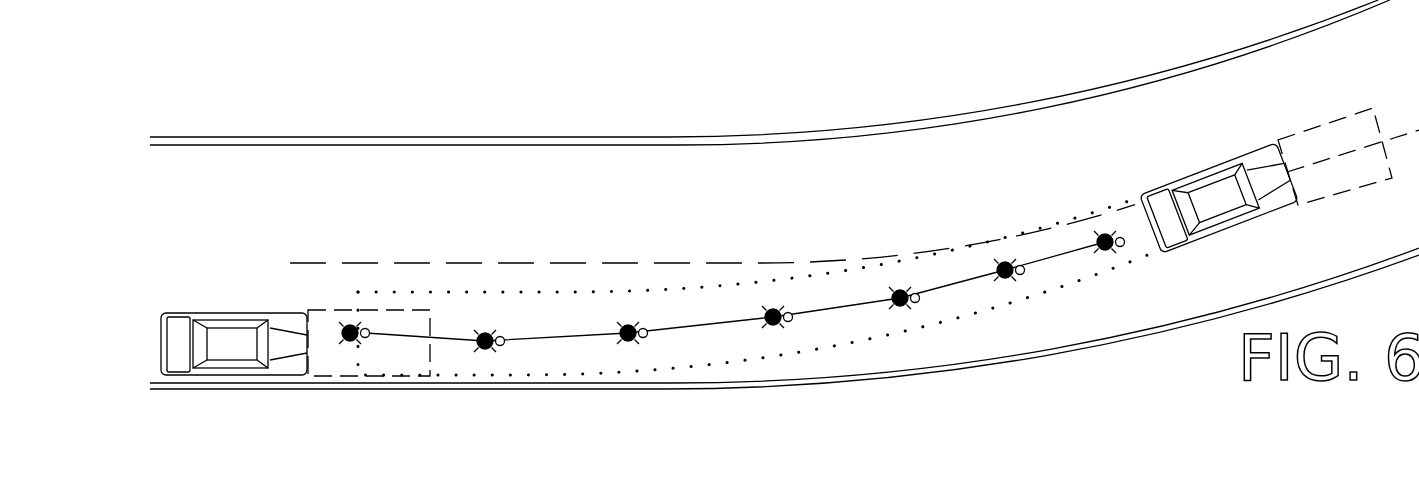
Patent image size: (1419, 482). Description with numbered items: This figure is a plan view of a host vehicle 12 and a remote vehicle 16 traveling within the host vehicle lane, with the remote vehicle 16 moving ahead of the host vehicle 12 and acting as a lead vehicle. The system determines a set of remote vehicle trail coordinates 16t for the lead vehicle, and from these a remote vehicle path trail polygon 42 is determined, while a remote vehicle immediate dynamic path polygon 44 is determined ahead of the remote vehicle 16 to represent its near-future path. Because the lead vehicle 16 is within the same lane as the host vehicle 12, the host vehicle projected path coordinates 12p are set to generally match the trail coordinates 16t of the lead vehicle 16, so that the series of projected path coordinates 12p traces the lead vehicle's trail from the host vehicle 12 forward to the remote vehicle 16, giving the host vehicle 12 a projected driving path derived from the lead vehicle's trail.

The host vehicle 12 is at (250, 316).
The host vehicle projected path coordinates 12p is at (918, 295).
The remote vehicle 16 is at (1207, 172).
The remote vehicle trail coordinates 16t is at (1102, 232).
The remote vehicle path trail polygon 42 is at (808, 272).
The remote vehicle immediate dynamic path polygon 44 is at (1318, 128).